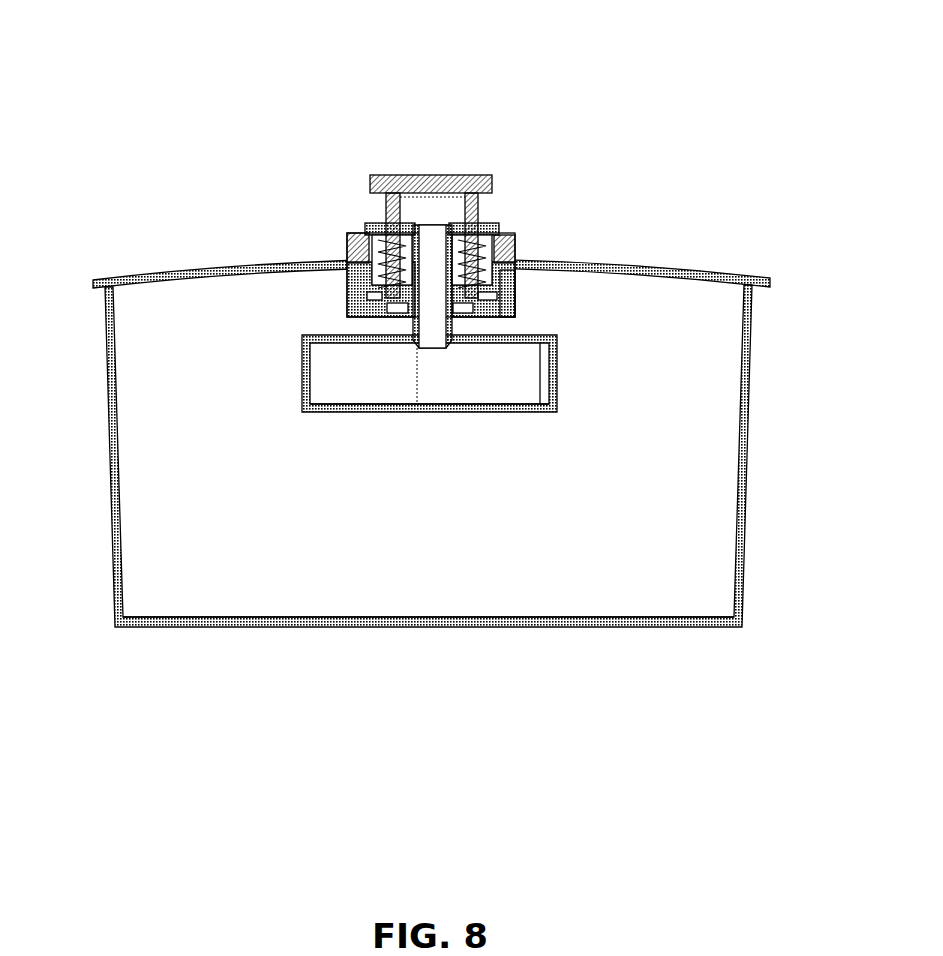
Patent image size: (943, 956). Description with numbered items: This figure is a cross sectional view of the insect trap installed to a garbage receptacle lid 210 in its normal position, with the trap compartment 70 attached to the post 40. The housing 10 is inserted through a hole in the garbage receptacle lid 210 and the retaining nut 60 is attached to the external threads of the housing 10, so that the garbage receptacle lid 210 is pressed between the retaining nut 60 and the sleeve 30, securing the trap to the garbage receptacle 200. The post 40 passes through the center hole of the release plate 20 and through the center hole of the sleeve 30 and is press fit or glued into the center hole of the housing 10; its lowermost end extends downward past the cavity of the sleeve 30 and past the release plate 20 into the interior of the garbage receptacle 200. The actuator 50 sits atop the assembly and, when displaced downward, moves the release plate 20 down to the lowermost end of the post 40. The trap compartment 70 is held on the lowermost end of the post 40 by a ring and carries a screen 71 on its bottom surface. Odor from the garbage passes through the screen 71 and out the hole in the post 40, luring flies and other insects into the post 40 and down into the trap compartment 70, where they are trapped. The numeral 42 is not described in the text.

The housing 10 is at (372, 227).
The release plate 20 is at (490, 317).
The sleeve 30 is at (516, 296).
The post 40 is at (410, 319).
The valve stem 42 is at (430, 320).
The actuator 50 is at (432, 177).
The retaining nut 60 is at (505, 235).
The trap compartment 70 is at (322, 407).
The screen 71 is at (455, 407).
The garbage receptacle 200 is at (455, 622).
The garbage receptacle lid 210 is at (285, 262).